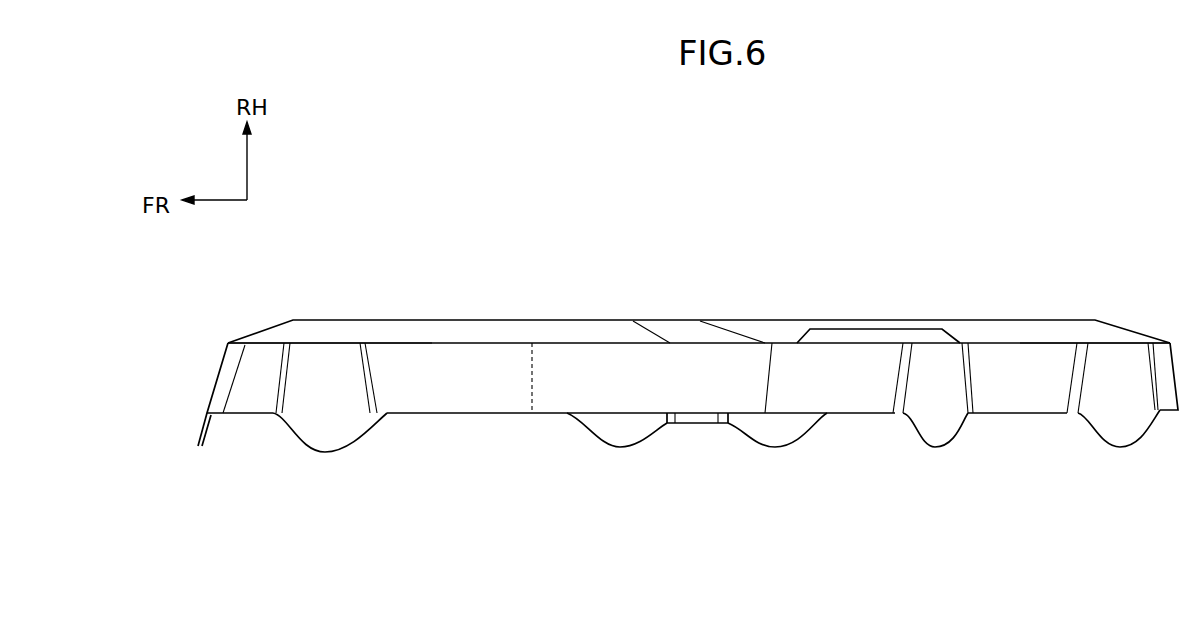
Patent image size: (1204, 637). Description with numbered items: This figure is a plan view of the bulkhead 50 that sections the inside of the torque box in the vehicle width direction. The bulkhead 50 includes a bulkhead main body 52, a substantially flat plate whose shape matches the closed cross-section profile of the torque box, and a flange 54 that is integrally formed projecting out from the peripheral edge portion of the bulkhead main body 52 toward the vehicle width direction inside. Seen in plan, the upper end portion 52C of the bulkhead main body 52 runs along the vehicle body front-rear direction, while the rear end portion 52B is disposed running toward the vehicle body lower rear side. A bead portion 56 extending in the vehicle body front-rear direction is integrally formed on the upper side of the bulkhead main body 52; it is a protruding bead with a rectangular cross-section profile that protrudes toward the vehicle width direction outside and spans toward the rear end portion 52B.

The bulkhead 50 is at (925, 245).
The bulkhead main body 52 is at (698, 336).
The rear end portion 52B is at (1021, 343).
The upper end portion 52C is at (432, 343).
The flange 54 is at (623, 395).
The bead portion 56 is at (567, 320).